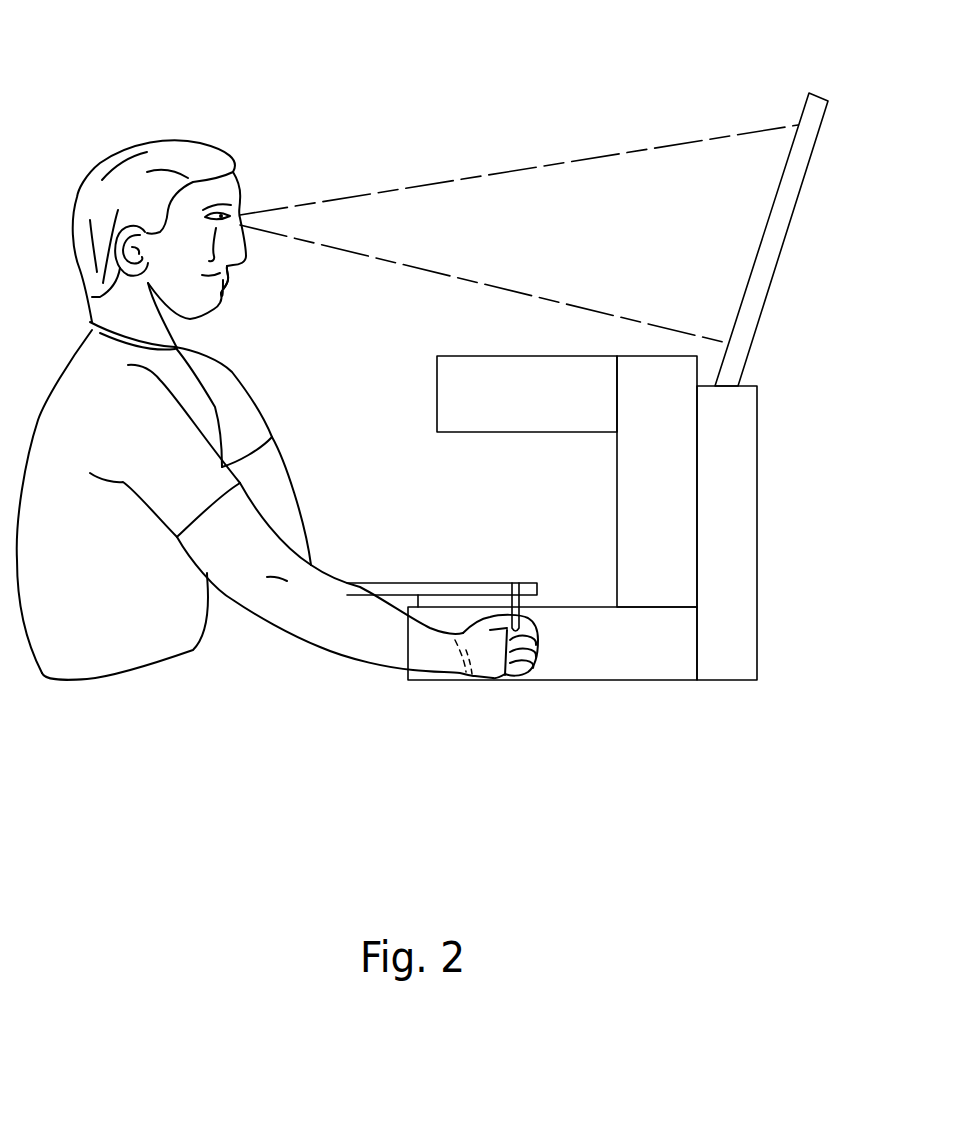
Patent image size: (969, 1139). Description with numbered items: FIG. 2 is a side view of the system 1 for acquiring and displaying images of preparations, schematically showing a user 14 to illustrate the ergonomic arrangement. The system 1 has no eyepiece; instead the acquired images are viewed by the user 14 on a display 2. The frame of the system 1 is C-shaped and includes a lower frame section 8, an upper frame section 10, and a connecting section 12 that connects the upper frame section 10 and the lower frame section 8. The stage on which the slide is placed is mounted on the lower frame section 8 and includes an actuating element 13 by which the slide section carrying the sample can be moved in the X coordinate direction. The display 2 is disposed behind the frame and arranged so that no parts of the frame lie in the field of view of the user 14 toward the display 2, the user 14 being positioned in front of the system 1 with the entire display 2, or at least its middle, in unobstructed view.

The system 1 is at (419, 488).
The display 2 is at (790, 170).
The lower frame section 8 is at (640, 652).
The upper frame section 10 is at (545, 406).
The connecting section 12 is at (674, 502).
The actuating element 13 is at (505, 675).
The user 14 is at (183, 157).